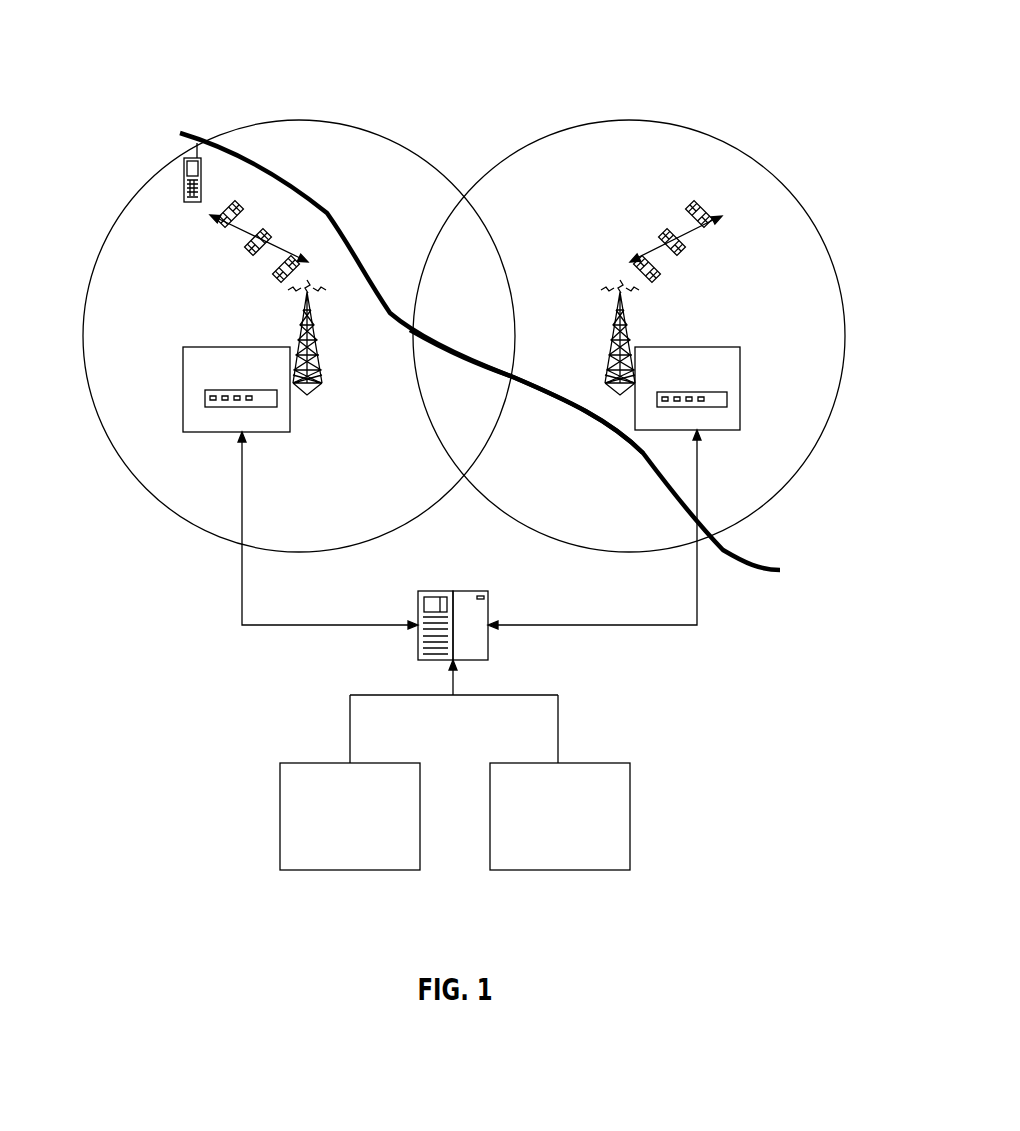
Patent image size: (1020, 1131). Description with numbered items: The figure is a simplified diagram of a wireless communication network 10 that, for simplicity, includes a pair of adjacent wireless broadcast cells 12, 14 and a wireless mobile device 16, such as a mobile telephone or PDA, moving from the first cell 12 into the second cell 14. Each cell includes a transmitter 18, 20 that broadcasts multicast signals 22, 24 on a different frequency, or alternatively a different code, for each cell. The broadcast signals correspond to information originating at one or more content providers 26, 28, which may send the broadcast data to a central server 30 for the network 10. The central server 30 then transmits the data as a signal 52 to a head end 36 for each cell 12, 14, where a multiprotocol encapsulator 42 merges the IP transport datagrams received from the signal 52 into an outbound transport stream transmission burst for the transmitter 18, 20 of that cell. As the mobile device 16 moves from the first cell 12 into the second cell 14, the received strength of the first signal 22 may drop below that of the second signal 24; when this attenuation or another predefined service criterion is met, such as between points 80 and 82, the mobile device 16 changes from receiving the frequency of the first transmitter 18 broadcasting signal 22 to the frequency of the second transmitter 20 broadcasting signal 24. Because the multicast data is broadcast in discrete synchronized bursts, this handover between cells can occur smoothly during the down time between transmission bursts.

The wireless communication network 10 is at (485, 130).
The first wireless broadcast cell 12 is at (170, 505).
The second wireless broadcast cell 14 is at (768, 487).
The wireless mobile device 16 is at (182, 173).
The first transmitter 18 is at (300, 330).
The second transmitter 20 is at (627, 330).
The first multicast signal 22 is at (207, 230).
The second multicast signal 24 is at (713, 198).
The content provider 26 is at (280, 783).
The content provider 28 is at (630, 773).
The central server 30 is at (455, 593).
The head end 36 is at (183, 363).
The multiprotocol encapsulator 42 is at (205, 397).
The signal 52 is at (242, 598).
The point 80 is at (400, 352).
The point 82 is at (519, 398).